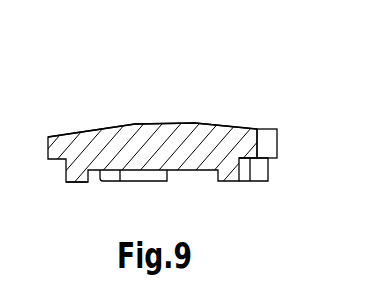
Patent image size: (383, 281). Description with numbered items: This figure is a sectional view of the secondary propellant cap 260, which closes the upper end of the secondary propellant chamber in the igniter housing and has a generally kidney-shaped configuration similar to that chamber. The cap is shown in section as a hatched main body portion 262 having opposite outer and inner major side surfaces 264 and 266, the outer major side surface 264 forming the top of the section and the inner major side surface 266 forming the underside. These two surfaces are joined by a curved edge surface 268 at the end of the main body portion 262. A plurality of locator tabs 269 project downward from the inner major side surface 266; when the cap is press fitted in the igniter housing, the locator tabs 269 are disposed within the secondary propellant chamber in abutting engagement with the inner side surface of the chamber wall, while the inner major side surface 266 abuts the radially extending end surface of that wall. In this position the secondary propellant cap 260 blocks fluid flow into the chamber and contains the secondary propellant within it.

The secondary propellant cap 260 is at (181, 143).
The main body portion 262 is at (183, 143).
The outer major side surface 264 is at (168, 125).
The inner major side surface 266 is at (190, 170).
The curved edge surface 268 is at (267, 143).
The locator tabs 269 is at (73, 182).